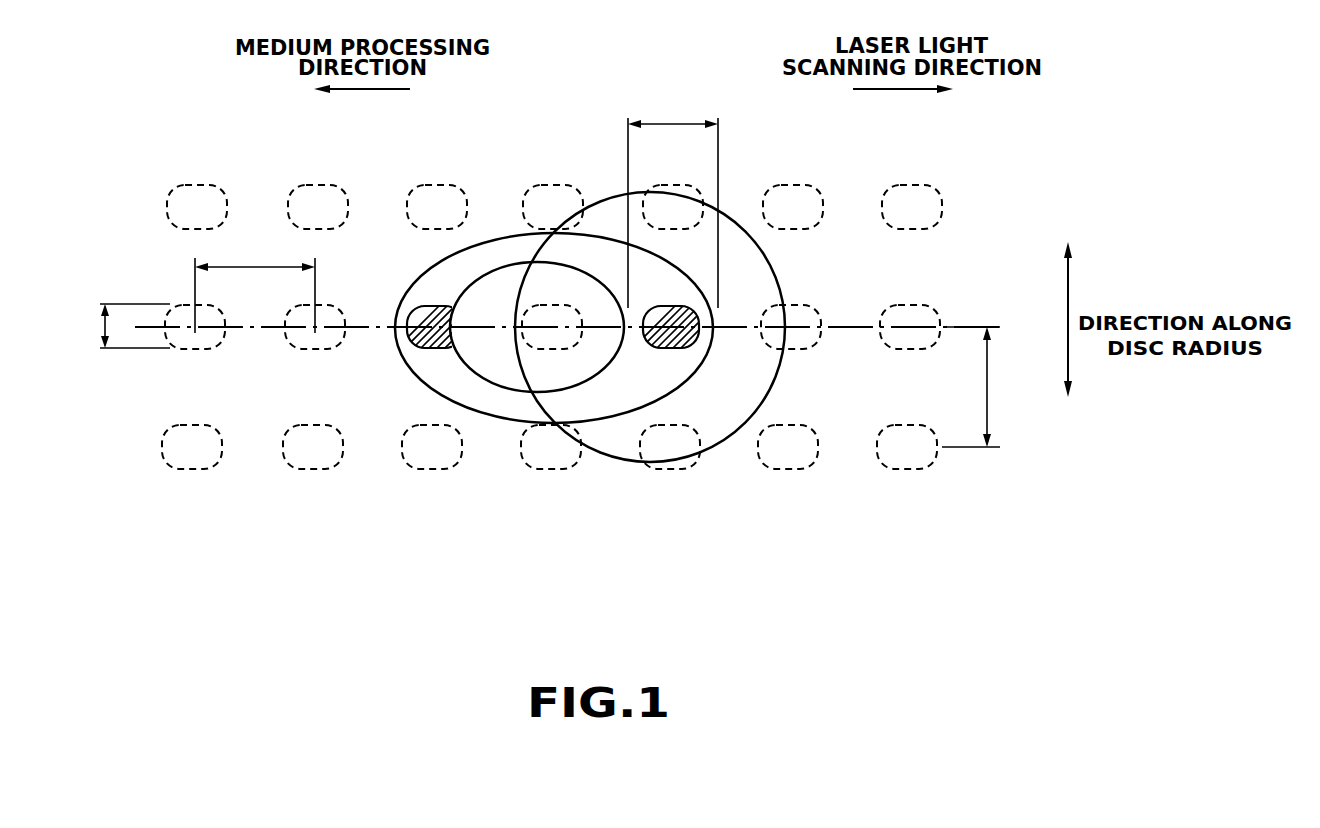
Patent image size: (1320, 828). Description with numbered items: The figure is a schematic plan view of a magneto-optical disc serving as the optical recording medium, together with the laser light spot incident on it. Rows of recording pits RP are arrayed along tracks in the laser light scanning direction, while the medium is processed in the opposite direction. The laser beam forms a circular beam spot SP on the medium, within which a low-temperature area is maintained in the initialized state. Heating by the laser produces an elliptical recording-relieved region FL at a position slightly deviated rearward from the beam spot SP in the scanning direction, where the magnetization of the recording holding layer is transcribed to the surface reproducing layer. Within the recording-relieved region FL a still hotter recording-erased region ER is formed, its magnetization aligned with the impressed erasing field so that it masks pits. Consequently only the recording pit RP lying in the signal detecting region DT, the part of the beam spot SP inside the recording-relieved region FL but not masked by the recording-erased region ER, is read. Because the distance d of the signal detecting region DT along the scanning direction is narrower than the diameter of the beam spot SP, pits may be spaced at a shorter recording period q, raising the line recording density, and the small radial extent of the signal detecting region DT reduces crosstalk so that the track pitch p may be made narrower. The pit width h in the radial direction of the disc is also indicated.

The beam spot SP is at (735, 207).
The recording pit RP is at (923, 307).
The recording-erased region ER is at (497, 394).
The recording-relieved region FL is at (511, 426).
The signal detecting region DT is at (620, 393).
The distance along the laser light scanning direction d is at (673, 202).
The shortest pit recording period q is at (255, 283).
The pit width h is at (123, 326).
The track pitch p is at (976, 387).